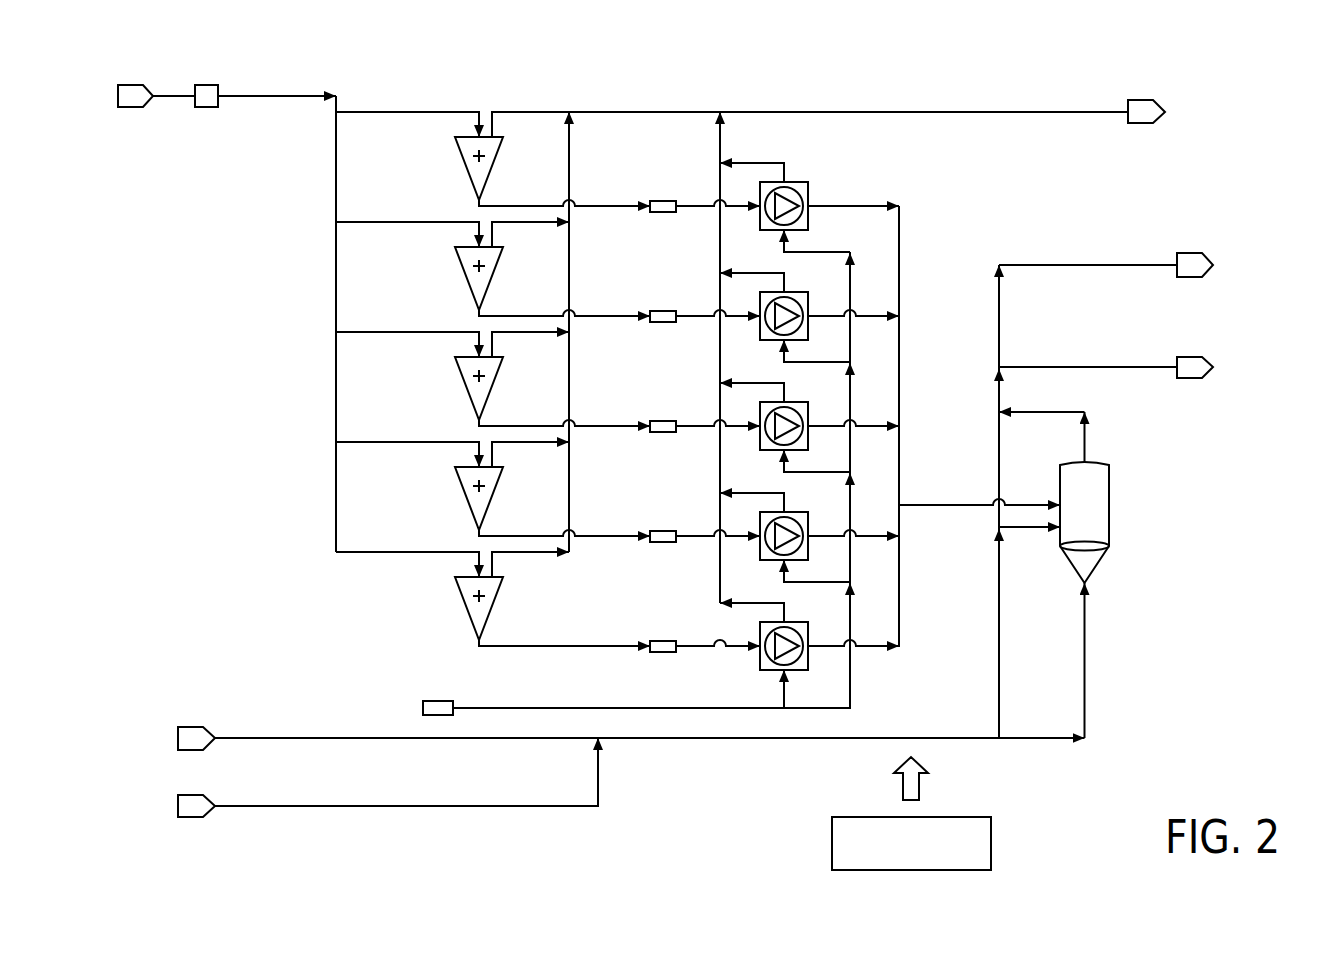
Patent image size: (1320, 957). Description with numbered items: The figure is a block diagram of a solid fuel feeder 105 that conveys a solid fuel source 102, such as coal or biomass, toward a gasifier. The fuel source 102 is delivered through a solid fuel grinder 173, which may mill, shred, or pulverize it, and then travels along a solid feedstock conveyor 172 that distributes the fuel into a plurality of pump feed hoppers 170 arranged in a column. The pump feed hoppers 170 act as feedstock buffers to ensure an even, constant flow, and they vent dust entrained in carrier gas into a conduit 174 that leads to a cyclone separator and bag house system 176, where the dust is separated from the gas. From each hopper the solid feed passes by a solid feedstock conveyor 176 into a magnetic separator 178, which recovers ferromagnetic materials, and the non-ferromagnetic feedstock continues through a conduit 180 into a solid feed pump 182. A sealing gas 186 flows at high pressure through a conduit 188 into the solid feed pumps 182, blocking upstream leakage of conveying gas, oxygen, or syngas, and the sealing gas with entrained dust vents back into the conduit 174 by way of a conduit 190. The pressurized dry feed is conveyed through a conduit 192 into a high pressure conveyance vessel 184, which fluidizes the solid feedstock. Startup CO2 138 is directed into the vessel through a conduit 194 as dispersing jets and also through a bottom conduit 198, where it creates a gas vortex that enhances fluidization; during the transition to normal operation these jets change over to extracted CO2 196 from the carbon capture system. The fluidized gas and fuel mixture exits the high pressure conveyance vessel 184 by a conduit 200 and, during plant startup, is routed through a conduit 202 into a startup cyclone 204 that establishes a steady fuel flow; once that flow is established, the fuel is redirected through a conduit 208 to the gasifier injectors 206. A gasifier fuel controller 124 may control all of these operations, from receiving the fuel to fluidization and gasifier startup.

The fuel source 102 is at (127, 108).
The solid fuel feeder 105 is at (778, 90).
The gasifier fuel controller 124 is at (991, 843).
The startup CO2 138 is at (176, 806).
The pump feed hoppers 170 is at (470, 172).
The solid feedstock conveyor 172 is at (336, 301).
The solid fuel grinder 173 is at (207, 108).
The conduit 174 is at (569, 165).
The cyclone separator and bag house system 176 is at (1167, 107).
The magnetic separator 178 is at (663, 212).
The conduit 180 is at (736, 210).
The solid feed pump 182 is at (790, 182).
The high pressure conveyance vessel 184 is at (1110, 505).
The sealing gas 186 is at (438, 701).
The conduit 188 is at (618, 708).
The conduit 190 is at (722, 152).
The conduit 192 is at (899, 378).
The conduit 194 is at (1027, 530).
The extracted CO2 196 is at (176, 738).
The bottom conduit 198 is at (1085, 667).
The conduit 200 is at (1050, 411).
The conduit 202 is at (1042, 264).
The startup cyclone 204 is at (1213, 265).
The gasifier injectors 206 is at (1213, 367).
The conduit 208 is at (1050, 366).